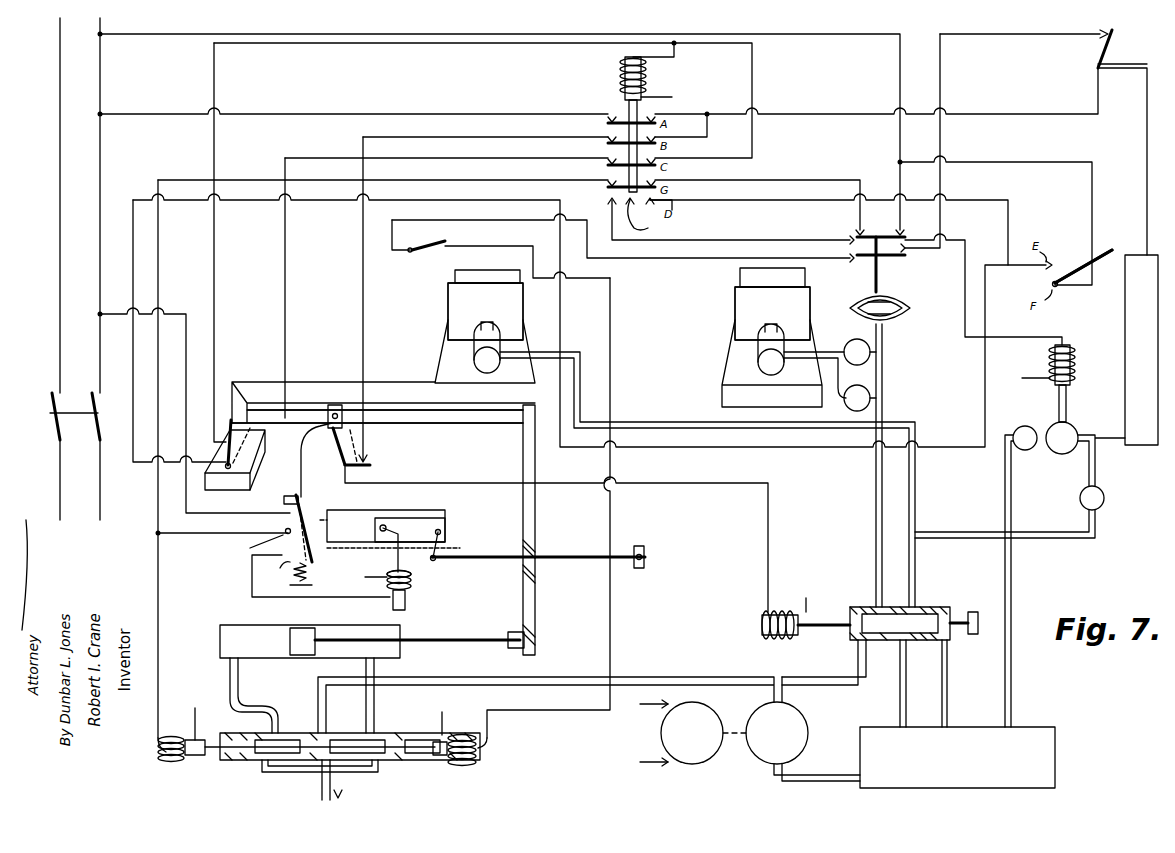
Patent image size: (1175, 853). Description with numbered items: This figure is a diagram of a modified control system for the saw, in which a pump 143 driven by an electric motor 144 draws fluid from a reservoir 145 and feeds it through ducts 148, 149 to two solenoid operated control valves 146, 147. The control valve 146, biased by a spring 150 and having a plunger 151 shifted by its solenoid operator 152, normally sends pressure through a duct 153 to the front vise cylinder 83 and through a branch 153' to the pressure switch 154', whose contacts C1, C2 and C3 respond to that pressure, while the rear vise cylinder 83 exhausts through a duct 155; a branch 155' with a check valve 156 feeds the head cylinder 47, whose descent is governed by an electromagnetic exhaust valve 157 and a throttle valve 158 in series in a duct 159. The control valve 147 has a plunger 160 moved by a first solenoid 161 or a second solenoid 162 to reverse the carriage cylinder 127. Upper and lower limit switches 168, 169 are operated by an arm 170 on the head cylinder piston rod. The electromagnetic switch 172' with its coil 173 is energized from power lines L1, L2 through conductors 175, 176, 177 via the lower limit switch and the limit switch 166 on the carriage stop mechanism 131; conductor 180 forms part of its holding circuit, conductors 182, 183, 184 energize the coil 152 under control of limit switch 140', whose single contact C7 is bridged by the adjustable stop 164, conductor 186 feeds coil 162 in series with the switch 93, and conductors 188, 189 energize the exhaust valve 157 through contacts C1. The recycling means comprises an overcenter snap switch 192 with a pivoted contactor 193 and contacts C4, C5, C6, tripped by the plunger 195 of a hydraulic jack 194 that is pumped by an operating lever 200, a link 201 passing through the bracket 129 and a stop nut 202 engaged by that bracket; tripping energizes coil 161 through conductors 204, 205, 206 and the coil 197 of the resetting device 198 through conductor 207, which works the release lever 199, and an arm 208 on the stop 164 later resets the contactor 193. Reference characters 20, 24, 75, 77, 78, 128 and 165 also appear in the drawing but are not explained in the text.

The hydraulic motor unit 20 is at (726, 325).
The hydraulic motor unit 24 is at (428, 318).
The head cylinder 47 is at (1125, 310).
The machine bed 75 is at (420, 368).
The motor cap 77 is at (492, 287).
The motor housing 78 is at (448, 300).
The vise cylinder 83 is at (474, 362).
The switch 93 is at (430, 236).
The carriage cylinder 127 is at (252, 648).
The piston rod 128 is at (462, 648).
The depending bracket 129 is at (538, 500).
The carriage stop mechanism 131 is at (235, 496).
The limit switch 140' is at (377, 426).
The pump 143 is at (808, 733).
The electric motor 144 is at (712, 760).
The fluid reservoir 145 is at (878, 738).
The control valve 146 is at (940, 592).
The control valve 147 is at (246, 760).
The duct 148 is at (838, 676).
The duct 149 is at (684, 677).
The spring 150 is at (965, 640).
The plunger 151 is at (906, 650).
The solenoid operator 152 is at (770, 642).
The duct 153 is at (833, 462).
The branch duct 153' is at (893, 375).
The pressure switch 154' is at (898, 313).
The duct 155 is at (731, 479).
The branch duct 155' is at (1005, 541).
The check valve 156 is at (1077, 497).
The electromagnetic exhaust valve 157 is at (1082, 424).
The throttle valve 158 is at (1024, 424).
The duct 159 is at (1004, 482).
The control plunger 160 is at (300, 775).
The first solenoid 161 is at (180, 765).
The second solenoid 162 is at (452, 768).
The adjustable stop 164 is at (345, 400).
The switch arm 165 is at (250, 428).
The limit switch 166 is at (224, 410).
The upper limit switch 168 is at (1085, 52).
The lower limit switch 169 is at (1080, 275).
The arm 170 is at (1120, 64).
The electromagnetic switch 172' is at (654, 216).
The solenoid 173 is at (618, 72).
The conductor 175 is at (797, 40).
The conductor 176 is at (310, 210).
The conductor 177 is at (214, 245).
The conductor 180 is at (285, 265).
The conductor 182 is at (458, 98).
The conductor 183 is at (707, 140).
The conductor 184 is at (363, 290).
The conductor 186 is at (655, 260).
The conductor 188 is at (792, 205).
The conductor 189 is at (965, 280).
The overcenter snap switch 192 is at (316, 508).
The pivoted contactor 193 is at (252, 545).
The hydraulic jack 194 is at (420, 516).
The plunger 195 is at (330, 522).
The coil 197 is at (408, 592).
The electromagnetic resetting device 198 is at (418, 578).
The release lever 199 is at (386, 520).
The operating lever 200 is at (446, 530).
The link 201 is at (578, 556).
The stop nut 202 is at (640, 545).
The conductor 204 is at (186, 292).
The conductor 205 is at (200, 536).
The conductor 206 is at (158, 545).
The conductor 207 is at (302, 604).
The arm 208 is at (301, 470).
The contacts C1 is at (856, 230).
The contacts C2 is at (855, 247).
The contacts C3 is at (856, 260).
The upper contact C4 is at (284, 500).
The middle contact C5 is at (286, 530).
The bottom contact C6 is at (287, 573).
The contact C7 is at (372, 452).
The electric power line L1 is at (75, 269).
The electric power line L2 is at (48, 269).